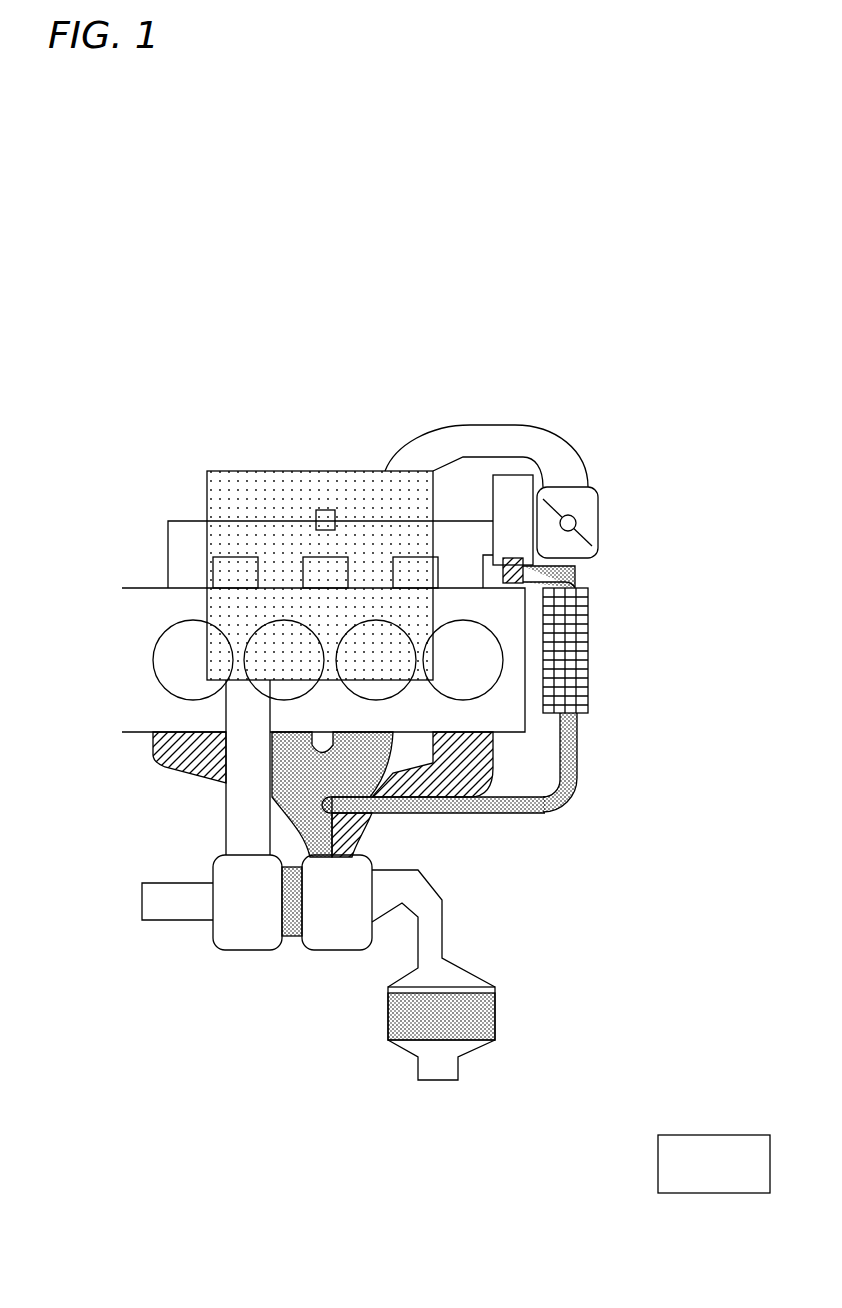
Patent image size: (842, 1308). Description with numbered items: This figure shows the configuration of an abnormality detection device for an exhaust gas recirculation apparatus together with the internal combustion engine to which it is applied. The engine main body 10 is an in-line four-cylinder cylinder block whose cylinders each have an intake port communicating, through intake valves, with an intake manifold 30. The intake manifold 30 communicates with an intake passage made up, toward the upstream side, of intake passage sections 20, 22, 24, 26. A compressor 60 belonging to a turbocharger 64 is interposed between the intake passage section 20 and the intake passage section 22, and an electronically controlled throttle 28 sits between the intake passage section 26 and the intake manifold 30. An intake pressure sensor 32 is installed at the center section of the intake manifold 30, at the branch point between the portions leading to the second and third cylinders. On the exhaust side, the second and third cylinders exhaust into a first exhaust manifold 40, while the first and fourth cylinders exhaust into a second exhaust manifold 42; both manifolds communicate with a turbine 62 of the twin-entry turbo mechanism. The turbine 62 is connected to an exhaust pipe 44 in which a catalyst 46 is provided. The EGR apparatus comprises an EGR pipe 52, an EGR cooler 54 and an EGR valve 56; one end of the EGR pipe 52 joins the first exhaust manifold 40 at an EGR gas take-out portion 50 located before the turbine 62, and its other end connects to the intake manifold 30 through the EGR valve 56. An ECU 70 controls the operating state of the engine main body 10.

The engine main body 10 is at (122, 640).
The intake passage section 20 is at (170, 920).
The intake passage section 22 is at (226, 840).
The intake passage section 24 is at (293, 471).
The intake passage section 26 is at (484, 425).
The electronically controlled throttle 28 is at (598, 497).
The intake manifold 30 is at (183, 521).
The intake pressure sensor 32 is at (325, 510).
The first exhaust manifold 40 is at (393, 752).
The second exhaust manifold 42 is at (572, 797).
The exhaust pipe 44 is at (442, 928).
The catalyst 46 is at (388, 1040).
The EGR gas take-out portion 50 is at (352, 832).
The EGR pipe 52 is at (577, 752).
The EGR cooler 54 is at (588, 645).
The EGR valve 56 is at (575, 573).
The compressor 60 is at (244, 950).
The turbine 62 is at (334, 950).
The turbocharger 64 is at (293, 957).
The ECU 70 is at (658, 1157).